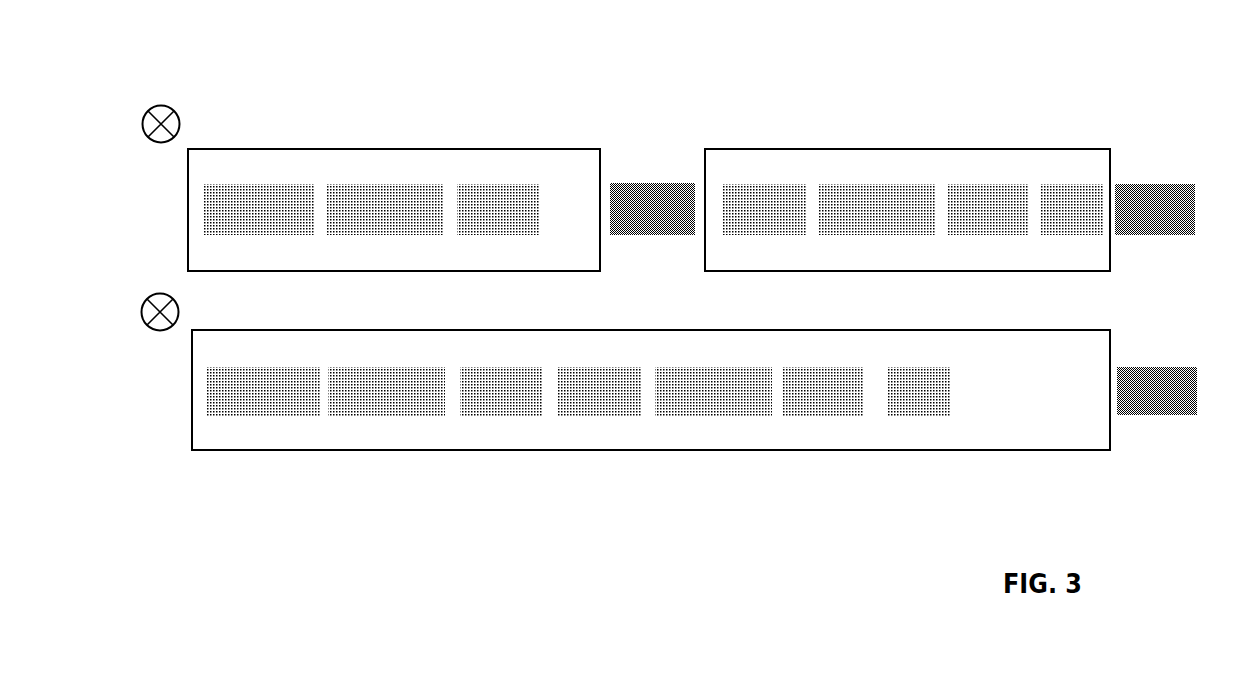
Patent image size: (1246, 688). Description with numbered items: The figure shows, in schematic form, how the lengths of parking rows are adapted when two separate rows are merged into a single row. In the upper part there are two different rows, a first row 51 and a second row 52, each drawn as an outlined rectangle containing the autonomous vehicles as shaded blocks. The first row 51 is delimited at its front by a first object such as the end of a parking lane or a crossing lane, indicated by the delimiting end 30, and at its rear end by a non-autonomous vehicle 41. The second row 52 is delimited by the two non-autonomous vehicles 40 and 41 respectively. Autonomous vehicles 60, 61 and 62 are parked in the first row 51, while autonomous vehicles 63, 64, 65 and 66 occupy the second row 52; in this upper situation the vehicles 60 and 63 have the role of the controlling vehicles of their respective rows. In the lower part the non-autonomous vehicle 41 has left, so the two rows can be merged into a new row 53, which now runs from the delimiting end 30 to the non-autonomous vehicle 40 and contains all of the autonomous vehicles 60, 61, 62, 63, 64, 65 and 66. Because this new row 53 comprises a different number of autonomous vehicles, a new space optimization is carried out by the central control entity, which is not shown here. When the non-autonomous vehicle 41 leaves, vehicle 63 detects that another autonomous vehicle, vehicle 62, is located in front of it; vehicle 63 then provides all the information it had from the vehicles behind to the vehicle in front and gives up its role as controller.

The delimiting end 30 is at (155, 102).
The non-autonomous vehicle 40 is at (1155, 180).
The non-autonomous vehicle 41 is at (635, 180).
The first row 51 is at (470, 145).
The second row 52 is at (845, 147).
The new row 53 is at (1098, 330).
The autonomous vehicle 60 is at (240, 192).
The autonomous vehicle 61 is at (395, 187).
The autonomous vehicle 62 is at (525, 183).
The autonomous vehicle 63 is at (755, 180).
The autonomous vehicle 64 is at (880, 180).
The autonomous vehicle 65 is at (968, 172).
The autonomous vehicle 66 is at (1063, 178).